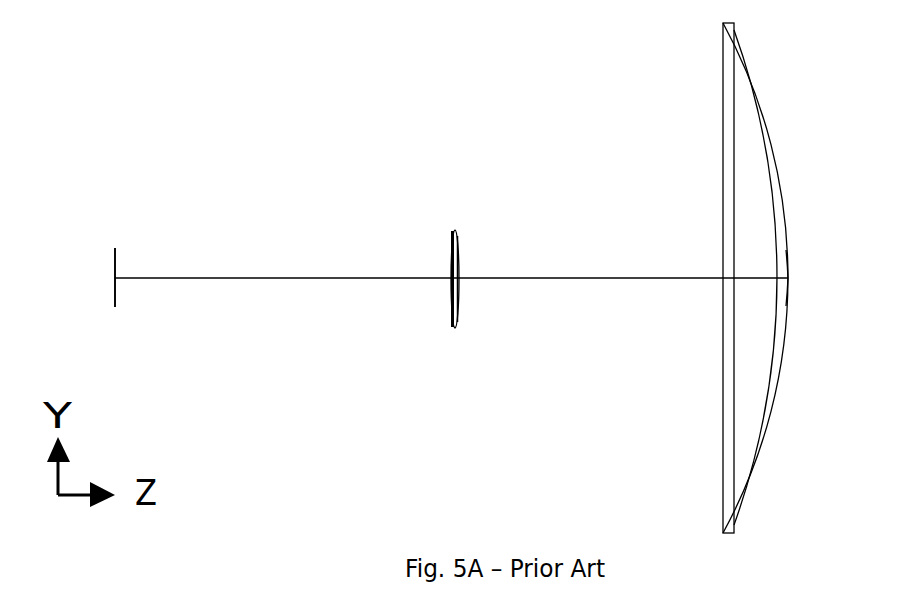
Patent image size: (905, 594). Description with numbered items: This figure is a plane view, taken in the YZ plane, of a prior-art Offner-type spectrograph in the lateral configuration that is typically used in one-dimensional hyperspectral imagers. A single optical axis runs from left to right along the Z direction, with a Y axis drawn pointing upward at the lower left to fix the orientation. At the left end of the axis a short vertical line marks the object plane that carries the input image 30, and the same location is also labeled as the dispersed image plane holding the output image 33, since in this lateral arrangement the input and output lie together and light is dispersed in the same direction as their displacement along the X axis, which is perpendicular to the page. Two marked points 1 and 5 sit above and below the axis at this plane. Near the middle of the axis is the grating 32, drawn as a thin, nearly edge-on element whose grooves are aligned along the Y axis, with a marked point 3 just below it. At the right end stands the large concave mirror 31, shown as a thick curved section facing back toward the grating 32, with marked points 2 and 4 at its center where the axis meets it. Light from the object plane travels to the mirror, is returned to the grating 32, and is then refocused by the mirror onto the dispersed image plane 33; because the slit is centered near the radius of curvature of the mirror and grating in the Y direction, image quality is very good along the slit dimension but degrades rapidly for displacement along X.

The input image 30 is at (172, 228).
The object point 1 is at (130, 242).
The object point 5 is at (130, 309).
The output image 33 is at (225, 335).
The grating 32 is at (462, 246).
The grating point 3 is at (473, 318).
The concave mirror 31 is at (671, 278).
The mirror point 2 is at (804, 250).
The mirror point 4 is at (805, 288).